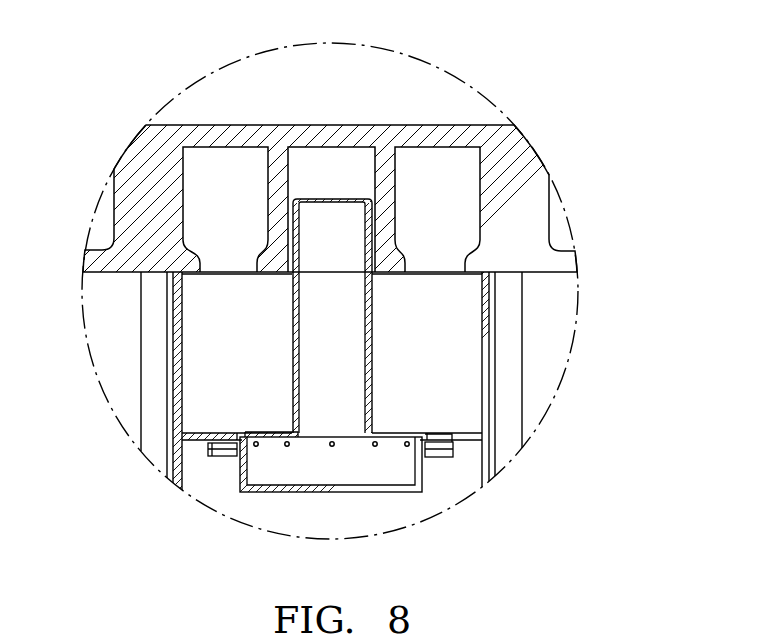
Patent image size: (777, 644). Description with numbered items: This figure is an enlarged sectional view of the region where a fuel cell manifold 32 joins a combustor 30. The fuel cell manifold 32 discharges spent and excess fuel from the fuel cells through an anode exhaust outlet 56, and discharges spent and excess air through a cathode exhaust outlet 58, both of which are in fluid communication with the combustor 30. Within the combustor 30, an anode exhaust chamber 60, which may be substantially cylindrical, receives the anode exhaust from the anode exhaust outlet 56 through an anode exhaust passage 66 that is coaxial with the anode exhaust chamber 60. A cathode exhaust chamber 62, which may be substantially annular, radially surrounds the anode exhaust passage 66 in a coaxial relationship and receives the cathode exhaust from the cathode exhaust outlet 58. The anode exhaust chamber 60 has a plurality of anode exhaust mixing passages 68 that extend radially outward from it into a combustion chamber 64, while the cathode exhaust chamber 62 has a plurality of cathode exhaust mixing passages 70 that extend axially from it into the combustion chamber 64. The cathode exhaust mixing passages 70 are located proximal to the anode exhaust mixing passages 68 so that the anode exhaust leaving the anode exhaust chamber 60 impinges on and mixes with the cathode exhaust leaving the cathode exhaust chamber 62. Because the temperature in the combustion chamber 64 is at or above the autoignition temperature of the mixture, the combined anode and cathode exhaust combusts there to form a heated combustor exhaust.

The combustor 30 is at (507, 417).
The fuel cell manifold 32 is at (152, 170).
The anode exhaust outlet 56 is at (345, 157).
The cathode exhaust outlet 58 is at (443, 242).
The anode exhaust chamber 60 is at (273, 472).
The cathode exhaust chamber 62 is at (438, 362).
The combustion chamber 64 is at (413, 511).
The anode exhaust passage 66 is at (347, 300).
The anode exhaust mixing passages 68 is at (372, 450).
The cathode exhaust mixing passages 70 is at (225, 437).